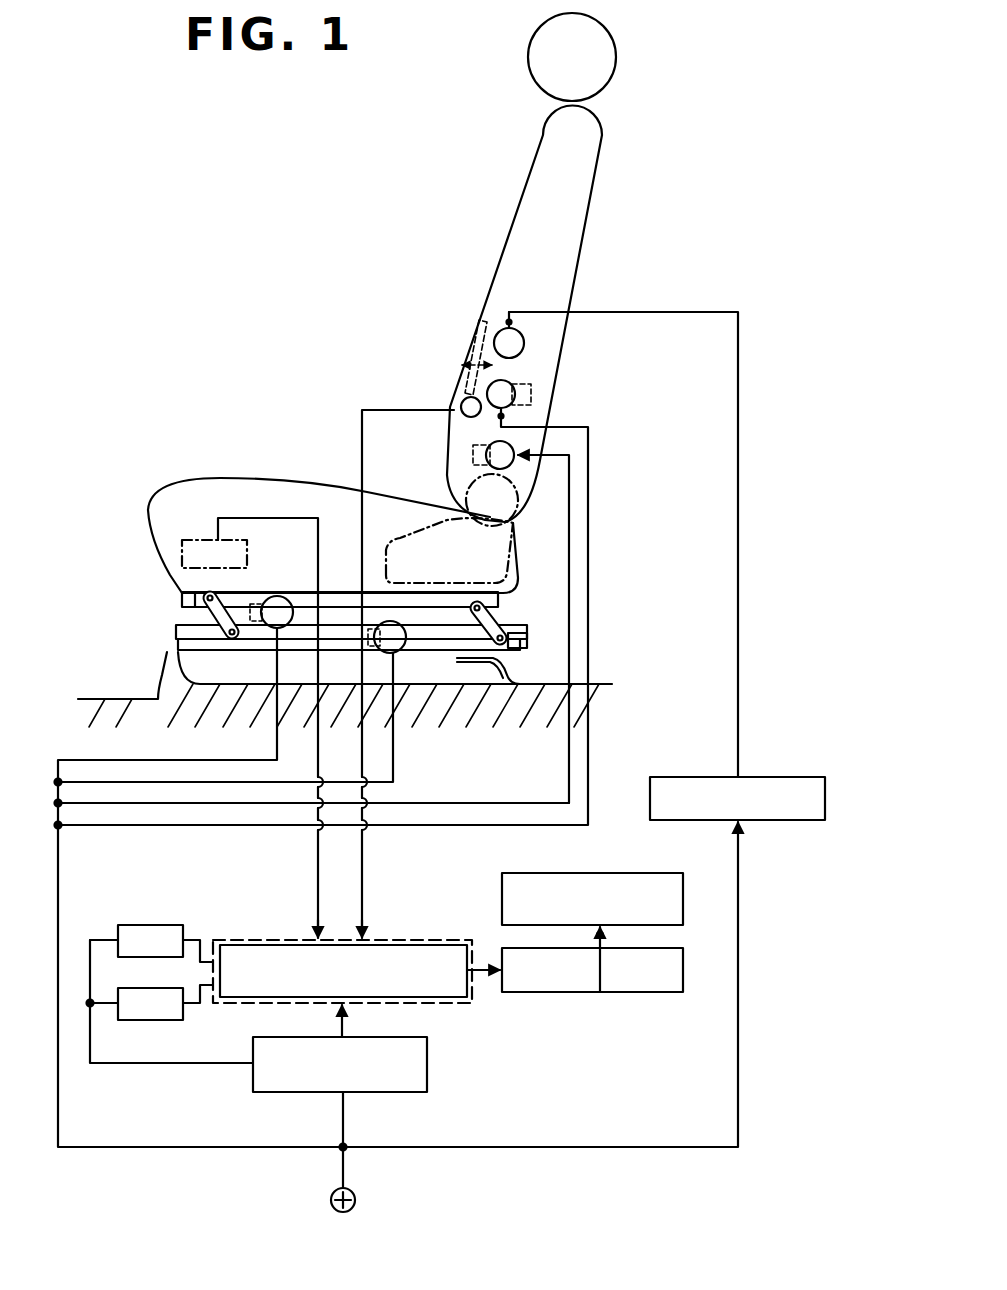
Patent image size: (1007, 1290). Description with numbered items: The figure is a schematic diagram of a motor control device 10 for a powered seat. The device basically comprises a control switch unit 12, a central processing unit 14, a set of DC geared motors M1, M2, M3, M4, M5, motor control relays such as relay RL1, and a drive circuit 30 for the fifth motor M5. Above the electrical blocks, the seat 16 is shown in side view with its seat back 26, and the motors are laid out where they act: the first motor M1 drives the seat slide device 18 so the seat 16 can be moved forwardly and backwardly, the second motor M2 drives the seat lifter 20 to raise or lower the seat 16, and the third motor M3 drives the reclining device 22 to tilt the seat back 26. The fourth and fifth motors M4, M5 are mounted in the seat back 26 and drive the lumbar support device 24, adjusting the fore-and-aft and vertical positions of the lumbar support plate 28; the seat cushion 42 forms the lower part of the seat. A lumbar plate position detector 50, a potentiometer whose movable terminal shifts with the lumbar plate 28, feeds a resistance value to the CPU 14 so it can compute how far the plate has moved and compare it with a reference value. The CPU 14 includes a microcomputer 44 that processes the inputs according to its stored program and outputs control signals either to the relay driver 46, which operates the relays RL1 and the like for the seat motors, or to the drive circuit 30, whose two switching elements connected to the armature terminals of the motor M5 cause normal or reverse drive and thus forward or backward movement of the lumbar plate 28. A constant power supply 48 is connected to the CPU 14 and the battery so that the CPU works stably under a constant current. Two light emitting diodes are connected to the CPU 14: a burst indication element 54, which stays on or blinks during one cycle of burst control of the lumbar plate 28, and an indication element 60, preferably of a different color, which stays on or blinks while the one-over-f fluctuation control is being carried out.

The motor control device 10 is at (60, 748).
The control switch unit 12 is at (182, 548).
The central processing unit 14 is at (445, 1003).
The seat 16 is at (290, 422).
The seat slide device 18 is at (165, 632).
The seat lifter 20 is at (505, 622).
The reclining device 22 is at (423, 537).
The lumbar support device 24 is at (483, 322).
The seat back 26 is at (513, 220).
The lumbar support plate 28 is at (472, 342).
The drive circuit 30 is at (672, 777).
The seat cushion 42 is at (207, 477).
The microcomputer 44 is at (432, 943).
The relay driver 46 is at (563, 993).
The constant power supply 48 is at (427, 1067).
The lumbar plate position detector 50 is at (461, 405).
The burst indication element 54 is at (183, 928).
The indication element 60 is at (183, 1015).
The first motor M1 is at (415, 650).
The second motor M2 is at (265, 592).
The third motor M3 is at (487, 447).
The fourth motor M4 is at (507, 380).
The fifth motor M5 is at (524, 340).
The relay RL1 is at (502, 873).